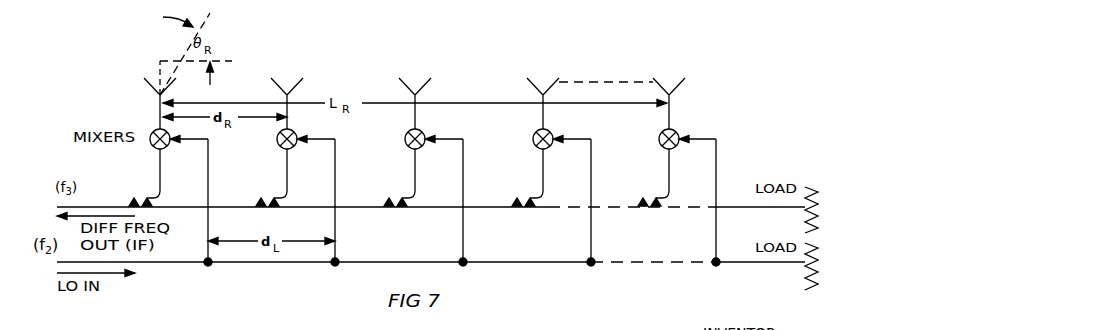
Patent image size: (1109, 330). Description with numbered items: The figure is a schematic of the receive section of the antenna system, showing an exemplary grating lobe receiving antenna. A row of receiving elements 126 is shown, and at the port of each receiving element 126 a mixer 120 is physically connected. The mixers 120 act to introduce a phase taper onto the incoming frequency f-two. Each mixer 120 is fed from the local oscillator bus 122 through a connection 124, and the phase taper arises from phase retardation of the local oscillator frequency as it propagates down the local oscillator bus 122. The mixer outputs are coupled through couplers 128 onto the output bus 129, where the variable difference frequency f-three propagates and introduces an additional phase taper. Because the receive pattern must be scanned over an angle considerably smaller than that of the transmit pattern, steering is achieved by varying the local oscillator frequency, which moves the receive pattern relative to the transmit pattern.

The mixers 120 is at (152, 147).
The local oscillator bus 122 is at (183, 266).
The feed lines from LO line to mixers 124 is at (209, 225).
The receiving element 126 is at (145, 80).
The directional couplers 128 is at (129, 202).
The output bus 129 is at (316, 209).